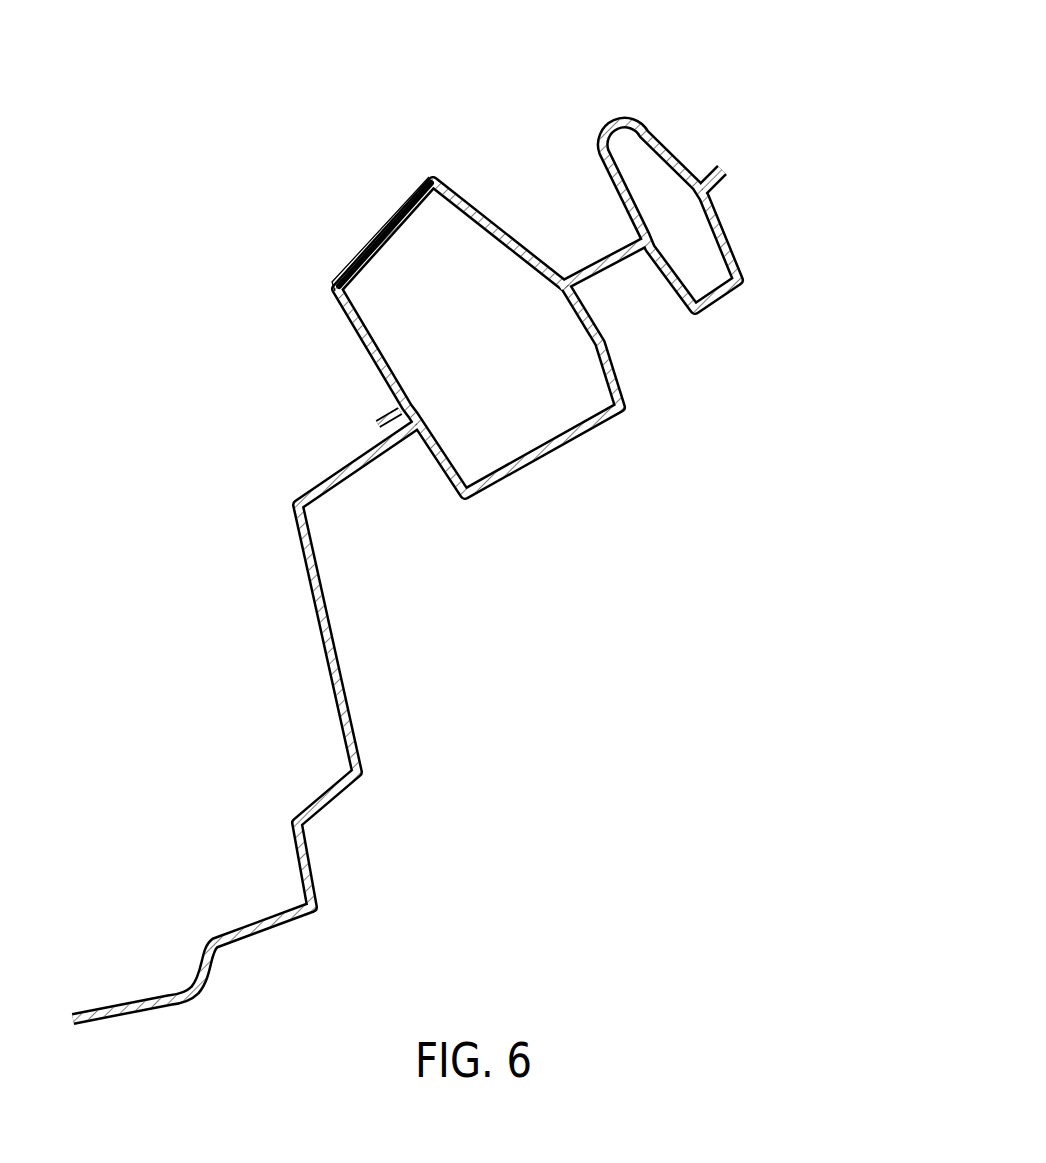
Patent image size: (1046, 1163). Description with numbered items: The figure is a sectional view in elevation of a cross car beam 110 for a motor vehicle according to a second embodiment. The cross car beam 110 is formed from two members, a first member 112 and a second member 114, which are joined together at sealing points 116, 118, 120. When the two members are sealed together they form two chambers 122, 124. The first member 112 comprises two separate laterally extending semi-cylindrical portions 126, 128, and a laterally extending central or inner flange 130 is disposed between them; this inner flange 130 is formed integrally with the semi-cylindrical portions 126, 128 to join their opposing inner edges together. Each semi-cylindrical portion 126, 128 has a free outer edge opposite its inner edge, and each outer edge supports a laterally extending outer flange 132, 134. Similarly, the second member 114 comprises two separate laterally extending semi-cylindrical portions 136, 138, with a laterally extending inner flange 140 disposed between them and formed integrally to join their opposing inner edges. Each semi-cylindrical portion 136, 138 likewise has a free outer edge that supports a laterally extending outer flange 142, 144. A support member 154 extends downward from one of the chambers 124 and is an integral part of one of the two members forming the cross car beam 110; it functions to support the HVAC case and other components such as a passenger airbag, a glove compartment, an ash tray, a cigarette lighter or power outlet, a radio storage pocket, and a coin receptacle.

The cross car beam 110 is at (278, 165).
The first member 112 is at (598, 60).
The second member 114 is at (554, 635).
The sealing point 116 is at (766, 157).
The sealing point 118 is at (703, 343).
The sealing point 120 is at (357, 390).
The chamber 122 is at (630, 165).
The chamber 124 is at (388, 300).
The semi-cylindrical portion 126 is at (628, 120).
The semi-cylindrical portion 128 is at (427, 180).
The inner flange 130 is at (595, 243).
The outer flange 132 is at (707, 162).
The outer flange 134 is at (393, 412).
The semi-cylindrical portion 136 is at (740, 286).
The semi-cylindrical portion 138 is at (563, 457).
The inner flange 140 is at (603, 292).
The outer flange 142 is at (723, 187).
The outer flange 144 is at (408, 428).
The support member 154 is at (318, 868).